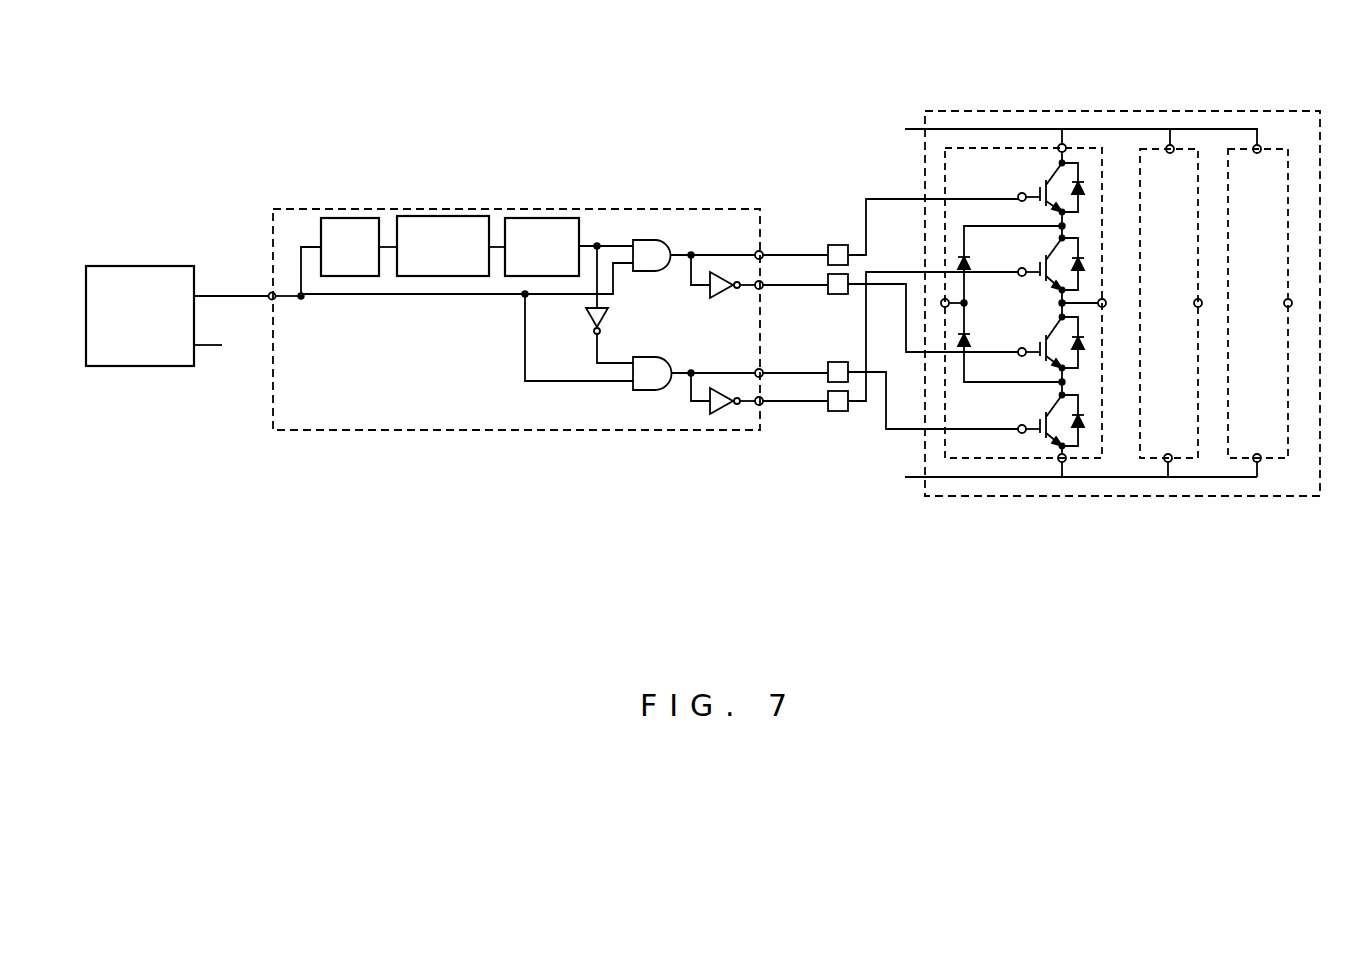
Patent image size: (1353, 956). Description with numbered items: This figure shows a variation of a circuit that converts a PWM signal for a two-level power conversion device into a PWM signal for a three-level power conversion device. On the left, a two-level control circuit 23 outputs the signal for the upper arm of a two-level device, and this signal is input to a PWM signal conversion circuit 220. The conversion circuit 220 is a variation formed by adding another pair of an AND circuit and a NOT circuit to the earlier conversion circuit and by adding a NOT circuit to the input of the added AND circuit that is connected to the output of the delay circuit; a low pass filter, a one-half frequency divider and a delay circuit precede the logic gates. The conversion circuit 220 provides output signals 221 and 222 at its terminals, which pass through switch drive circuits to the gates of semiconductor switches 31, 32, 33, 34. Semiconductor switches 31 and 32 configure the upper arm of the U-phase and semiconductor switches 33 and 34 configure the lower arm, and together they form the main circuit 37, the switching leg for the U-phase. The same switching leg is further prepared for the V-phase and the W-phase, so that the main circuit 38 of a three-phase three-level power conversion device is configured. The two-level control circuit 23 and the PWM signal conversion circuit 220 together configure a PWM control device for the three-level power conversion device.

The two-level control circuit 23 is at (143, 263).
The PWM signal conversion circuit 220 is at (545, 207).
The output signal 221 is at (763, 252).
The output signal 222 is at (763, 289).
The semiconductor switch 31 is at (1032, 190).
The semiconductor switch 32 is at (1032, 265).
The semiconductor switch 33 is at (1032, 345).
The semiconductor switch 34 is at (1032, 420).
The main circuit 37 is at (1017, 268).
The main circuit 38 is at (1023, 108).